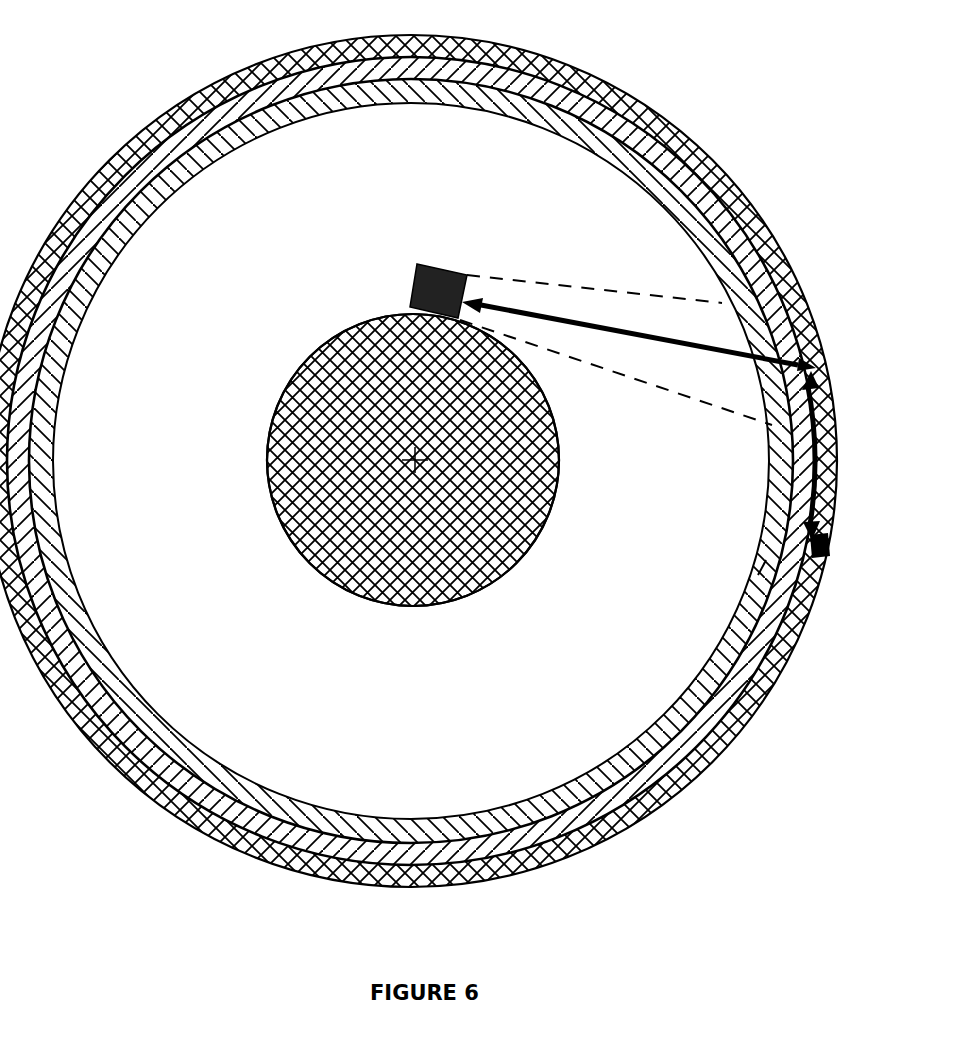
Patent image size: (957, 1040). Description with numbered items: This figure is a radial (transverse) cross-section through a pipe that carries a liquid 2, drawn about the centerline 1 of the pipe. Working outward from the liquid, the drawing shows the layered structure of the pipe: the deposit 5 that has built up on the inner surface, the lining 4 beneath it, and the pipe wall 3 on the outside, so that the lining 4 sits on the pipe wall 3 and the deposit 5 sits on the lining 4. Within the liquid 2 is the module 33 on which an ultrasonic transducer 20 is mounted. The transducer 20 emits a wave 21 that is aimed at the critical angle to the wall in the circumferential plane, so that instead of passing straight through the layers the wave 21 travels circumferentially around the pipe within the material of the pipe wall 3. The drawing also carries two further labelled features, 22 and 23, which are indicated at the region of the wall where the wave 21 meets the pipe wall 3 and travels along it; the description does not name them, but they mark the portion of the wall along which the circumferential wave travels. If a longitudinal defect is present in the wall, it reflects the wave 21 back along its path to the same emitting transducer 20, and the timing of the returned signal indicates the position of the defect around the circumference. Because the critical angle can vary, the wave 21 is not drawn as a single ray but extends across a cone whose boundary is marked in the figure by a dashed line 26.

The centerline 1 is at (412, 465).
The liquid 2 is at (411, 461).
The pipe wall 3 is at (163, 120).
The lining 4 is at (137, 177).
The deposit 5 is at (122, 242).
The transducer 20 is at (417, 264).
The wave 21 is at (567, 318).
The incidence region 22 is at (804, 307).
The inner wall 23 is at (762, 575).
The dashed line 26 is at (513, 277).
The module 33 is at (272, 417).